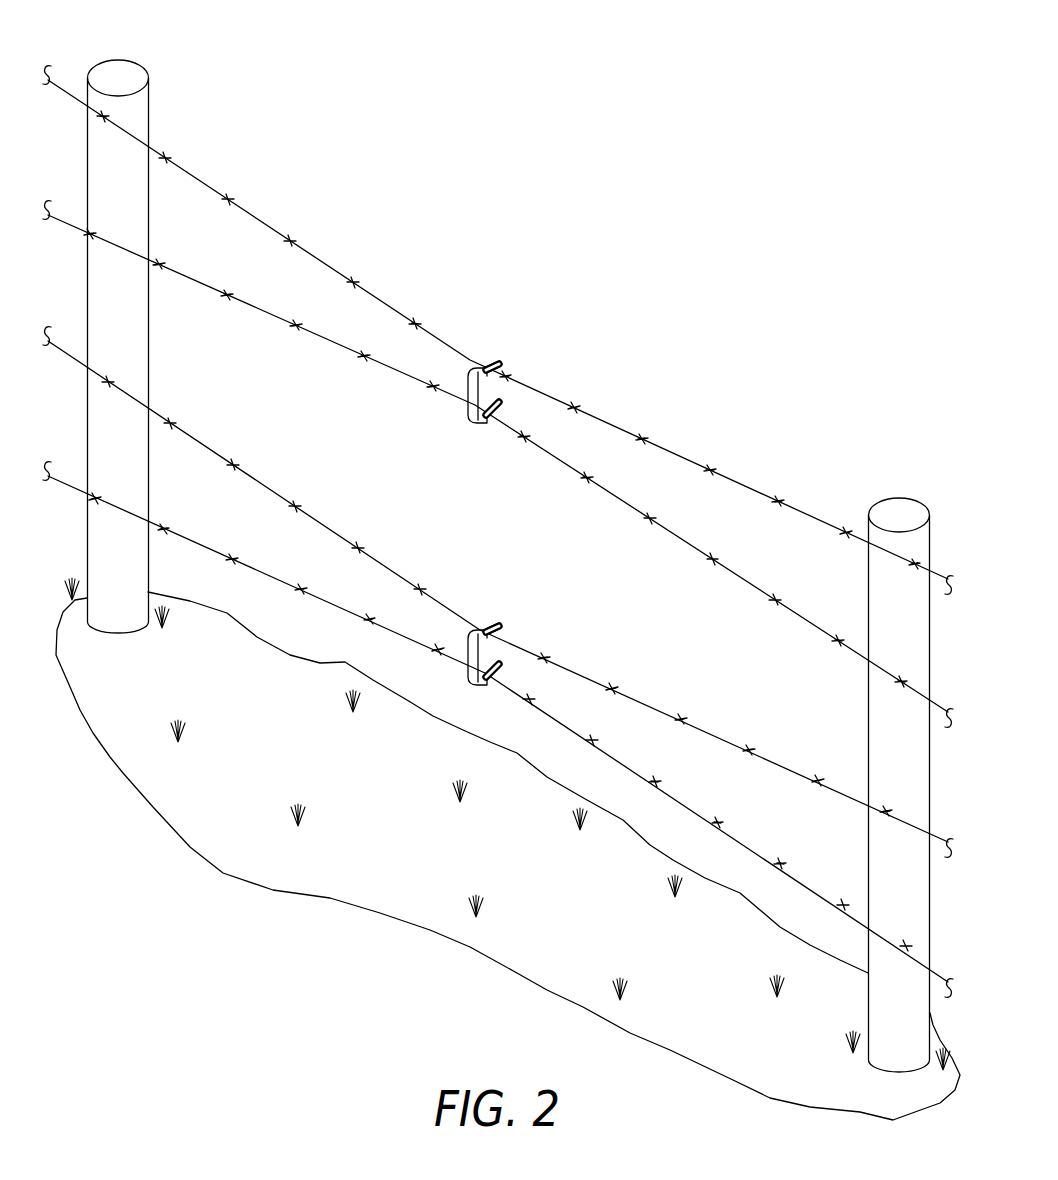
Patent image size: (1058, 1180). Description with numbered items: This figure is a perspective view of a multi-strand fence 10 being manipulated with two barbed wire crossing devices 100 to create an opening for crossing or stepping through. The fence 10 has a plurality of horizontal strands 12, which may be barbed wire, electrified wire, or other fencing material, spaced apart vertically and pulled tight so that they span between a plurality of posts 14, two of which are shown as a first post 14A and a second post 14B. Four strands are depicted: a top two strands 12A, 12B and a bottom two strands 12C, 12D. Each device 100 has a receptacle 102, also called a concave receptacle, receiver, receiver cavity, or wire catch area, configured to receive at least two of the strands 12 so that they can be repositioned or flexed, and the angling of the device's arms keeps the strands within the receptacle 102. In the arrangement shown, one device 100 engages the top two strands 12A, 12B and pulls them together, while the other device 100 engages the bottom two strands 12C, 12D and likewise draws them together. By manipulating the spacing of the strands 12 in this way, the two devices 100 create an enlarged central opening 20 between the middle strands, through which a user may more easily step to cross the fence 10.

The fence 10 is at (410, 249).
The horizontal strands 12 is at (498, 532).
The top strand 12A is at (633, 433).
The second strand 12B is at (709, 562).
The third strand 12C is at (668, 716).
The lowermost strand 12D is at (691, 809).
The posts 14 is at (509, 548).
The first post 14A is at (119, 72).
The second post 14B is at (908, 508).
The enlarged central opening 20 is at (432, 503).
The barbed wire crossing device 100 is at (488, 365).
The receptacle 102 is at (493, 389).